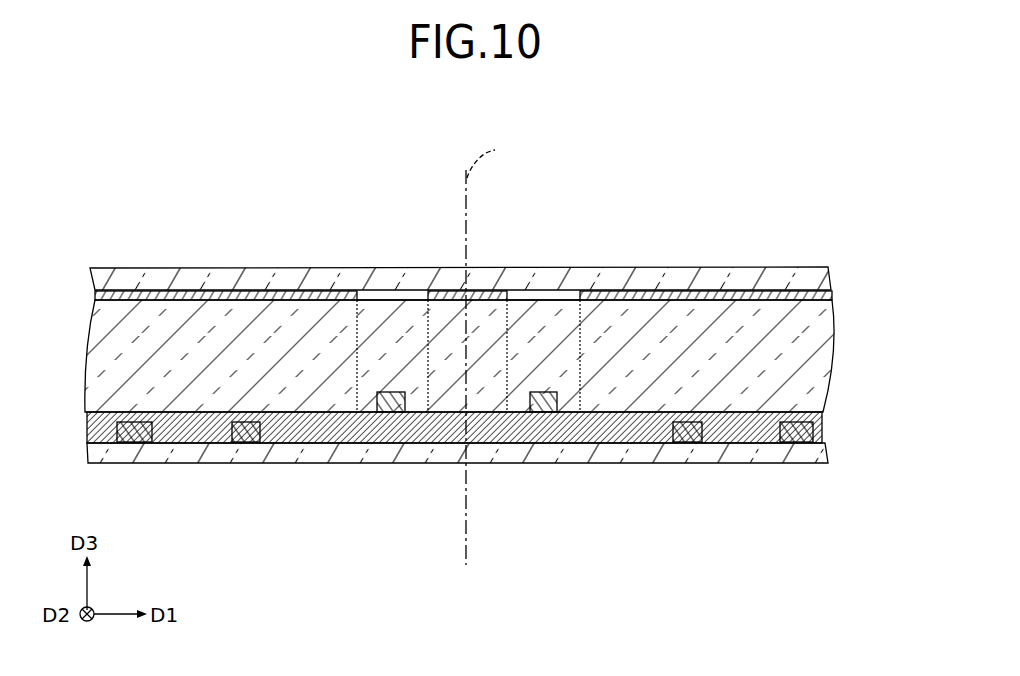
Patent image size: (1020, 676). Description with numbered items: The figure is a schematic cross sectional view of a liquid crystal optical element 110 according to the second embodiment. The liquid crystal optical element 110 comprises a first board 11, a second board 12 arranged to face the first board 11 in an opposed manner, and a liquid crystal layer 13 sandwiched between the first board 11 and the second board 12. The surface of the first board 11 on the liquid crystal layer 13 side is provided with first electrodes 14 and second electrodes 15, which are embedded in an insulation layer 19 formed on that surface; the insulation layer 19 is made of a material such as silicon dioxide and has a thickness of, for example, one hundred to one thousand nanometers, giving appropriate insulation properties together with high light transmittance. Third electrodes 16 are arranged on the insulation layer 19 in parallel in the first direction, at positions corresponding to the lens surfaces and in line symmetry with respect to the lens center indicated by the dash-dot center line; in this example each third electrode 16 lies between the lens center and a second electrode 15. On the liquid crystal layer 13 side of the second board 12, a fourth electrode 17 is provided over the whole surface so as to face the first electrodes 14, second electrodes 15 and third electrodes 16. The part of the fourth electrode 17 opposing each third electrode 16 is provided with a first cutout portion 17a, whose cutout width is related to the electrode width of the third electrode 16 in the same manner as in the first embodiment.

The liquid crystal optical element 110 is at (808, 190).
The first board 11 is at (815, 450).
The second board 12 is at (825, 282).
The liquid crystal layer 13 is at (812, 360).
The first electrode 14 is at (133, 432).
The second electrode 15 is at (245, 432).
The third electrode 16 is at (393, 405).
The fourth electrode 17 is at (223, 292).
The first cutout portion 17a is at (390, 299).
The insulation layer 19 is at (822, 423).